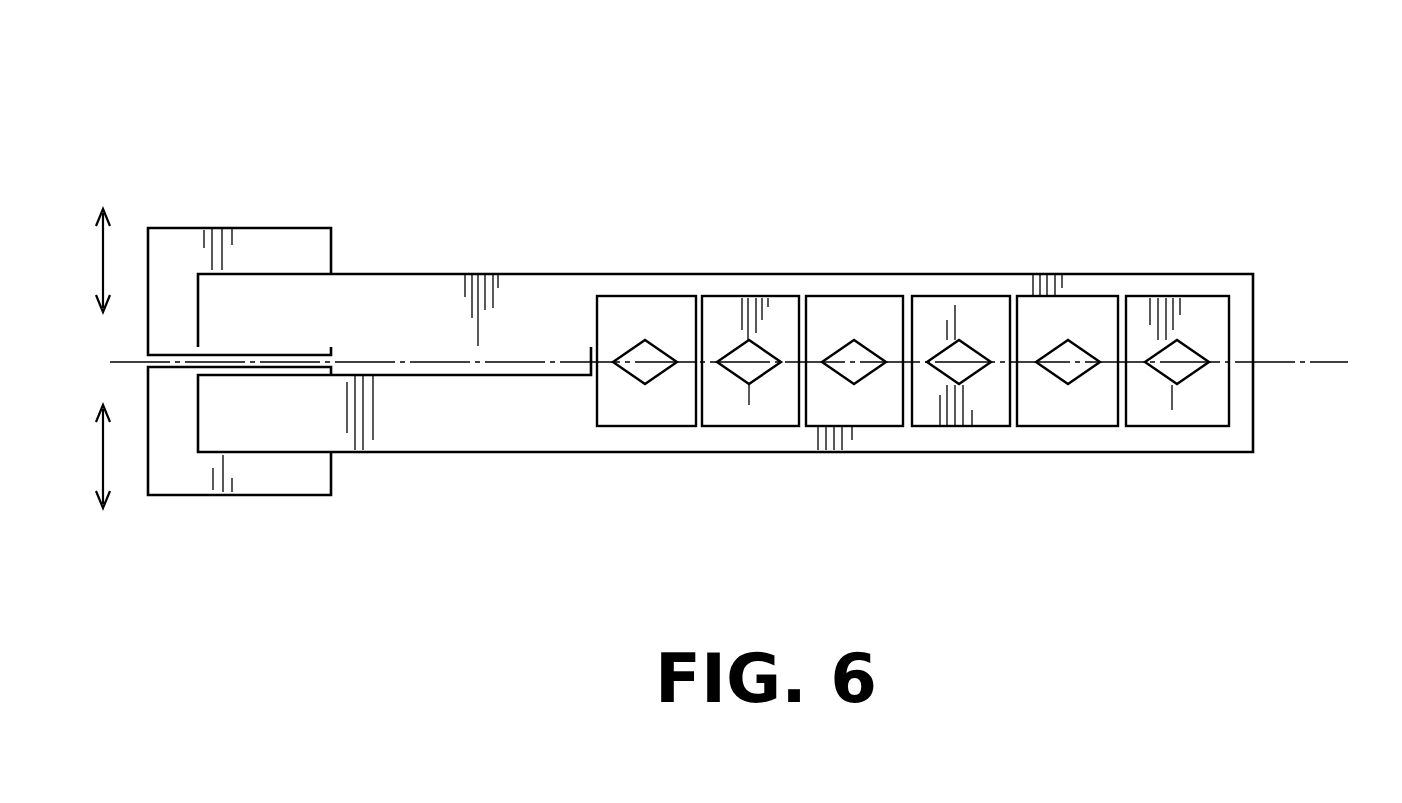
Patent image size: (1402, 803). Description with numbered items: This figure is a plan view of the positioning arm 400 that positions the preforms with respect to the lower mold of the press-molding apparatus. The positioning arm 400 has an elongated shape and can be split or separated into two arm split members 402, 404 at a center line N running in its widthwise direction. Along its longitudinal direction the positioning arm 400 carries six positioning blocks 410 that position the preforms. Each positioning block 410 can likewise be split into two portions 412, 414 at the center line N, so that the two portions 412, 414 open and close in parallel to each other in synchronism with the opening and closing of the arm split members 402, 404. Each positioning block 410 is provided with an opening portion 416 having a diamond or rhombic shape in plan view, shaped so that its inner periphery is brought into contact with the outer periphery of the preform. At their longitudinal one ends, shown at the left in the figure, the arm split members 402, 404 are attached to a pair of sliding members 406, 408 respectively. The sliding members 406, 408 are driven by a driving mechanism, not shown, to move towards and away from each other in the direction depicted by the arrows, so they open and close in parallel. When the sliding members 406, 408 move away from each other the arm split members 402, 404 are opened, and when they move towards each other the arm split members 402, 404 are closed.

The positioning arm 400 is at (1168, 142).
The arm split member 402 is at (553, 285).
The arm split member 404 is at (522, 428).
The sliding member 406 is at (287, 243).
The sliding member 408 is at (243, 477).
The positioning block 410 is at (1398, 193).
The portion of positioning block 412 is at (1187, 310).
The portion of positioning block 414 is at (1213, 395).
The opening portion 416 is at (1158, 375).
The center line N is at (1327, 360).